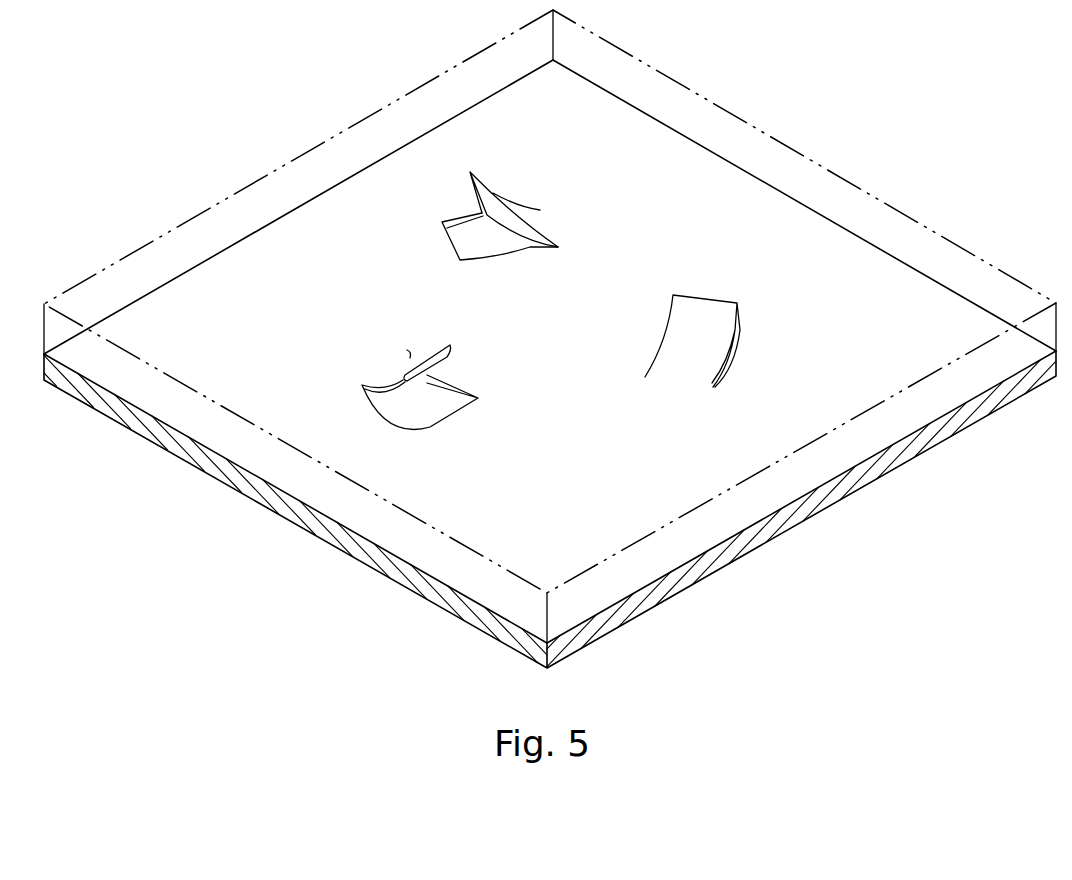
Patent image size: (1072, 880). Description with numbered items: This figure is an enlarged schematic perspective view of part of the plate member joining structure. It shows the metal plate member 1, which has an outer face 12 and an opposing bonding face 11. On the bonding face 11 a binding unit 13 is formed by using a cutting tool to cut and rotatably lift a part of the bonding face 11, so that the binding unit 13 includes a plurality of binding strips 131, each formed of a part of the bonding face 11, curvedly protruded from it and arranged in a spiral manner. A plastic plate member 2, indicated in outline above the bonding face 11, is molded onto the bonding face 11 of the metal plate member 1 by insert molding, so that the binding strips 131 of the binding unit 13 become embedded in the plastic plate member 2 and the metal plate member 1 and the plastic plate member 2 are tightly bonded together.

The metal plate member 1 is at (550, 364).
The plastic plate member 2 is at (803, 154).
The bonding face 11 is at (298, 205).
The outer face 12 is at (802, 521).
The binding unit 13 is at (548, 252).
The binding strip 131 is at (435, 192).